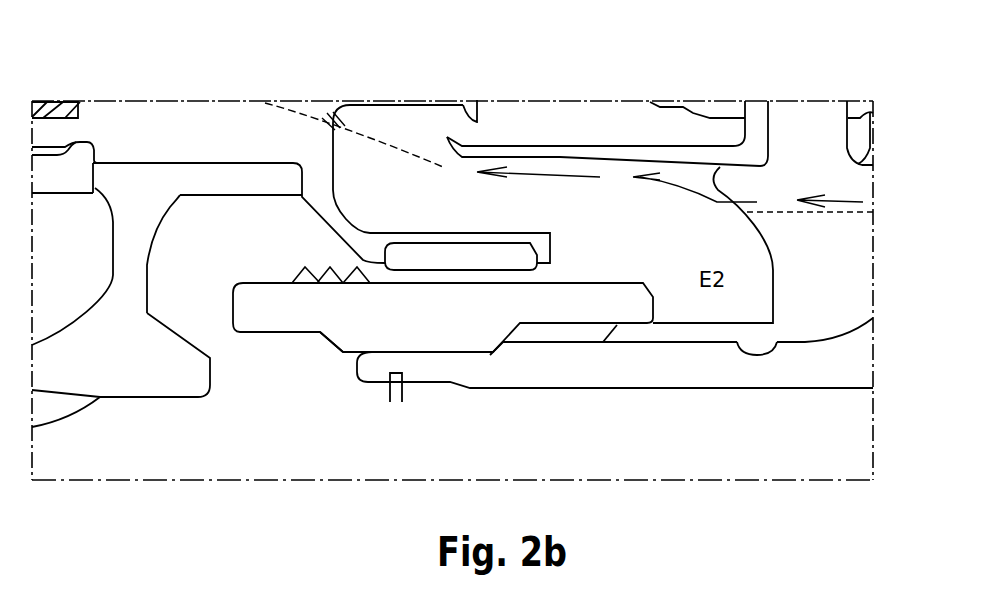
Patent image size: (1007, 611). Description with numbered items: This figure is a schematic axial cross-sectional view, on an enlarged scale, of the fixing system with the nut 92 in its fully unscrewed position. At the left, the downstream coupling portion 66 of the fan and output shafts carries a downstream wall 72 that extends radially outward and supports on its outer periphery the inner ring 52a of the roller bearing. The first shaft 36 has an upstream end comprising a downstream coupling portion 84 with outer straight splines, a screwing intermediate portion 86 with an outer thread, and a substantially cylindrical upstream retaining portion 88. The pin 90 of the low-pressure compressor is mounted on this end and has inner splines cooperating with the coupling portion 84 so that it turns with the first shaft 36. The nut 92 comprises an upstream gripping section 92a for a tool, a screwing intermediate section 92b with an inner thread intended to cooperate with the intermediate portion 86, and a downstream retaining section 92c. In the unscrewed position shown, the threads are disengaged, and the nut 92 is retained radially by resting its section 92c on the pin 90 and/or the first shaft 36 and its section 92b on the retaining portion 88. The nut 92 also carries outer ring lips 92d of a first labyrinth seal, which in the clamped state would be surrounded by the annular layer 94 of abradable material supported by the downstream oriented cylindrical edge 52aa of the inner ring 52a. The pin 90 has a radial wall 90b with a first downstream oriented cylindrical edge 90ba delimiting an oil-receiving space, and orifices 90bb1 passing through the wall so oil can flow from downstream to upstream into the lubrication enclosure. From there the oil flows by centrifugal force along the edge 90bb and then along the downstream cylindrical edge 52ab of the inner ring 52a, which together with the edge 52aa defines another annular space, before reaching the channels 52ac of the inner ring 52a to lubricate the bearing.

The inner ring 52a is at (122, 132).
The downstream wall 72 is at (130, 263).
The nut 92 is at (247, 260).
The channels 52ac is at (300, 130).
The downstream cylindrical edge 52ab is at (413, 100).
The cylindrical edge 52aa is at (408, 237).
The annular layer of abradable material 94 is at (502, 253).
The edge 90bb is at (583, 153).
The radial wall 90b is at (790, 118).
The first downstream oriented cylindrical edge 90ba is at (863, 165).
The orifices 90bb1 is at (840, 213).
The downstream coupling portion 66 is at (162, 378).
The upstream gripping section 92a is at (268, 332).
The outer ring lips 92d is at (330, 285).
The screwing intermediate section 92b is at (378, 335).
The upstream retaining portion 88 is at (438, 352).
The screwing intermediate portion 86 is at (537, 352).
The downstream retaining section 92c is at (625, 312).
The downstream coupling portion 84 is at (700, 345).
The first shaft 36 is at (730, 370).
The pin 90 is at (820, 333).